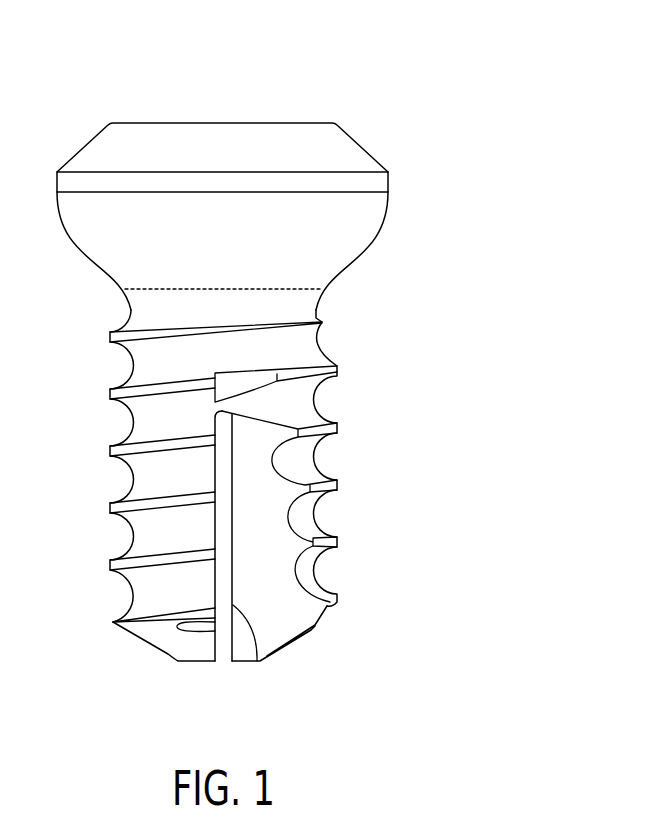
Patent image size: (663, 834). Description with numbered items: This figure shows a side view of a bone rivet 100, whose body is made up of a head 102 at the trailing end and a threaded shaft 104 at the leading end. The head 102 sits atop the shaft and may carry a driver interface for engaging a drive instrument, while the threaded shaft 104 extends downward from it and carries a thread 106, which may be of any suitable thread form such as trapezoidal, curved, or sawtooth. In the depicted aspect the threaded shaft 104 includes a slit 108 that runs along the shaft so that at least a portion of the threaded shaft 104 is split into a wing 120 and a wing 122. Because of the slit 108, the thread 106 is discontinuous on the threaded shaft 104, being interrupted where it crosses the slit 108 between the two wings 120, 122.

The bone rivet 100 is at (388, 95).
The head 102 is at (365, 223).
The threaded shaft 104 is at (415, 419).
The thread 106 is at (110, 510).
The slit 108 is at (235, 554).
The wing 120 is at (164, 660).
The wing 122 is at (283, 668).